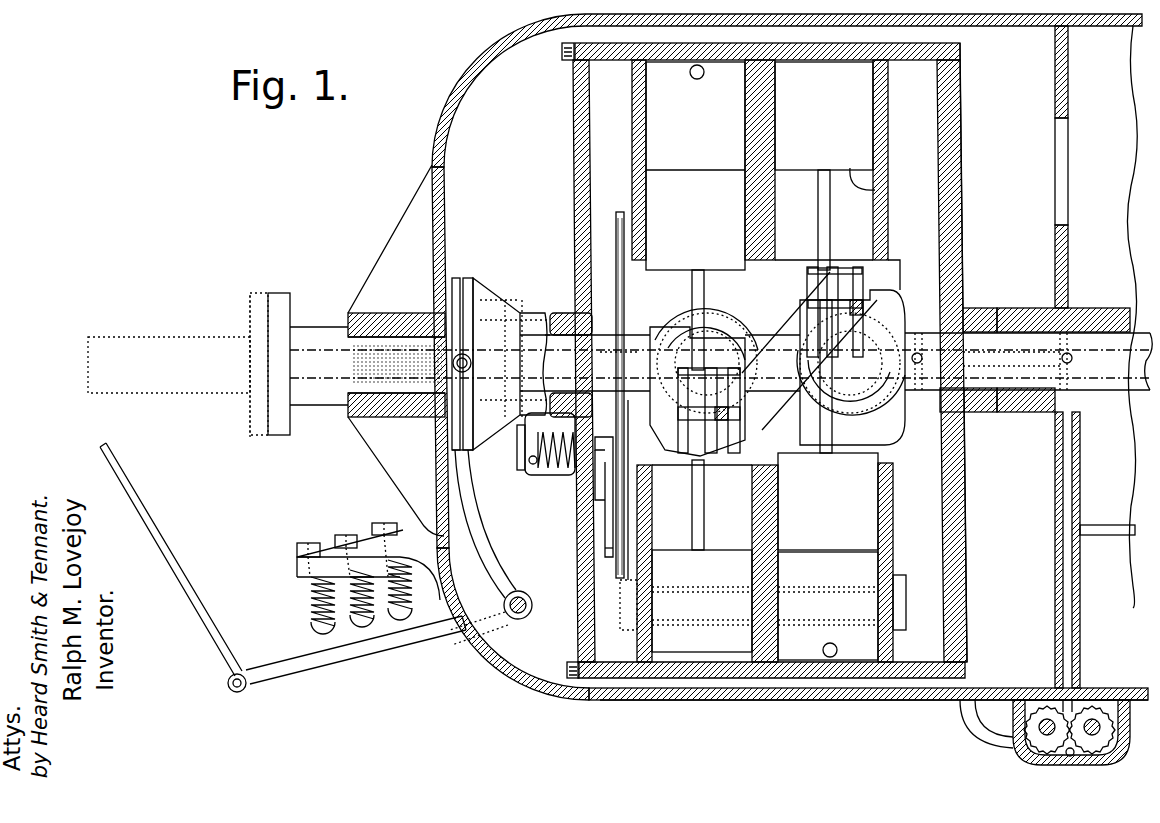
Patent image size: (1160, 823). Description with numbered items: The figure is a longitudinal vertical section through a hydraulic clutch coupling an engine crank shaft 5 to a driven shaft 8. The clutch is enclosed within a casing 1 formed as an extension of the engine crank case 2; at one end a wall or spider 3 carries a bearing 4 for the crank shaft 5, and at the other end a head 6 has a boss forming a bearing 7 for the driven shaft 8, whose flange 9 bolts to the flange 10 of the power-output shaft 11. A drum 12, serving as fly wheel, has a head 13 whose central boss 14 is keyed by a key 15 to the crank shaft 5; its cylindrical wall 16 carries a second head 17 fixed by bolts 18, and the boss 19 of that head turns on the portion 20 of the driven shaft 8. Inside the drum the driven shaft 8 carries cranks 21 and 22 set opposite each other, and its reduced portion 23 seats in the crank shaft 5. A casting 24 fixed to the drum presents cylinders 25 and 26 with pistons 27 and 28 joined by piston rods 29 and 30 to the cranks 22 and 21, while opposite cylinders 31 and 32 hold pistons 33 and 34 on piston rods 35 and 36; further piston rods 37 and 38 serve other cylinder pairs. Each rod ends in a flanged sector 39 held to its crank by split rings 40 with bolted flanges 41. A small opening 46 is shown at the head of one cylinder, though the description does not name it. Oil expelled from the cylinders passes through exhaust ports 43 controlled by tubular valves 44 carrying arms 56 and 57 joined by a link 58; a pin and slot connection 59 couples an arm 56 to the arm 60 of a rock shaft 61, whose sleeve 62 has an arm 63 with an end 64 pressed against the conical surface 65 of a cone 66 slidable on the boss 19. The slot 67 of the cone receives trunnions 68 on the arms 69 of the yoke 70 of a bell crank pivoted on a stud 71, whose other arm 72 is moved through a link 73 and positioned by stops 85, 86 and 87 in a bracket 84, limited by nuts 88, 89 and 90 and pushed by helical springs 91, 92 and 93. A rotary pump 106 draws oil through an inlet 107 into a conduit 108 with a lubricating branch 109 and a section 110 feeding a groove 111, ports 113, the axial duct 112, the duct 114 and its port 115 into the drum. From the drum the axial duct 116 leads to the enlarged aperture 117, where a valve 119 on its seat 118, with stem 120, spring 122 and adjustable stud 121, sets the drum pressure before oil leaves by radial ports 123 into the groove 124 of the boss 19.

The casing 1 is at (595, 700).
The crank case 2 is at (1100, 610).
The wall or spider 3 is at (1068, 258).
The bearing 4 is at (1090, 312).
The crank shaft 5 is at (1118, 380).
The head 6 is at (432, 148).
The bearing 7 is at (360, 320).
The driven shaft 8 is at (335, 400).
The flange 9 is at (290, 300).
The flange 10 is at (255, 297).
The shaft 11 is at (205, 337).
The drum 12 is at (930, 135).
The head 13 is at (963, 162).
The central boss 14 is at (970, 308).
The key 15 is at (984, 328).
The cylindrical wall 16 is at (810, 45).
The head 17 is at (574, 138).
The bolts 18 is at (563, 58).
The central boss 19 is at (556, 442).
The portion of the driven shaft 20 is at (390, 342).
The crank 21 is at (748, 432).
The crank 22 is at (892, 262).
The axial reduced portion 23 is at (935, 400).
The casting 24 is at (888, 130).
The cylinder 25 is at (860, 90).
The cylinder 26 is at (636, 100).
The piston 27 is at (877, 186).
The piston 28 is at (667, 172).
The piston rod 29 is at (818, 265).
The piston rod 30 is at (704, 290).
The cylinder 31 is at (872, 555).
The cylinder 32 is at (694, 563).
The piston 33 is at (870, 510).
The piston 34 is at (672, 555).
The piston rod 35 is at (832, 440).
The piston rod 36 is at (704, 500).
The piston rod 37 is at (862, 305).
The piston rod 38 is at (742, 415).
The flanged sector 39 is at (832, 270).
The split rings 40 is at (808, 285).
The flanges 41 is at (808, 325).
The exhaust ports 43 is at (838, 650).
The tubular valves 44 is at (906, 605).
The port 46 is at (697, 80).
The arm 56 is at (602, 570).
The arm 57 is at (623, 210).
The link 58 is at (629, 455).
The pin and slot connection 59 is at (605, 548).
The arm 60 is at (605, 502).
The rock shaft 61 is at (592, 442).
The sleeve 62 is at (542, 475).
The arm 63 is at (525, 440).
The laterally extending end 64 is at (548, 390).
The conical surface 65 is at (478, 400).
The cone 66 is at (470, 290).
The peripheral slot 67 is at (455, 285).
The trunnions 68 is at (420, 418).
The arms 69 is at (458, 368).
The yoke shaped member 70 is at (475, 505).
The shaft or stud 71 is at (532, 605).
The arm 72 is at (405, 640).
The link 73 is at (165, 545).
The bracket 84 is at (408, 540).
The stop 85 is at (412, 620).
The stop 86 is at (365, 625).
The stop 87 is at (318, 628).
The nut 88 is at (384, 523).
The nut 89 is at (349, 535).
The nut 90 is at (310, 543).
The helical spring 91 is at (410, 602).
The helical spring 92 is at (360, 608).
The helical spring 93 is at (318, 603).
The rotary pump 106 is at (1020, 755).
The inlet 107 is at (960, 722).
The conduit 108 is at (1062, 567).
The branch 109 is at (1097, 526).
The section 110 is at (1057, 458).
The groove 111 is at (1067, 330).
The axial duct 112 is at (1040, 398).
The ports 113 is at (1073, 358).
The duct 114 is at (988, 395).
The port 115 is at (918, 352).
The axial duct 116 is at (620, 345).
The axial aperture 117 is at (322, 380).
The valve seat 118 is at (541, 320).
The spring pressed valve 119 is at (547, 348).
The stem 120 is at (418, 312).
The screw threaded stud 121 is at (375, 345).
The spring 122 is at (490, 298).
The radial ports 123 is at (522, 300).
The groove 124 is at (505, 298).